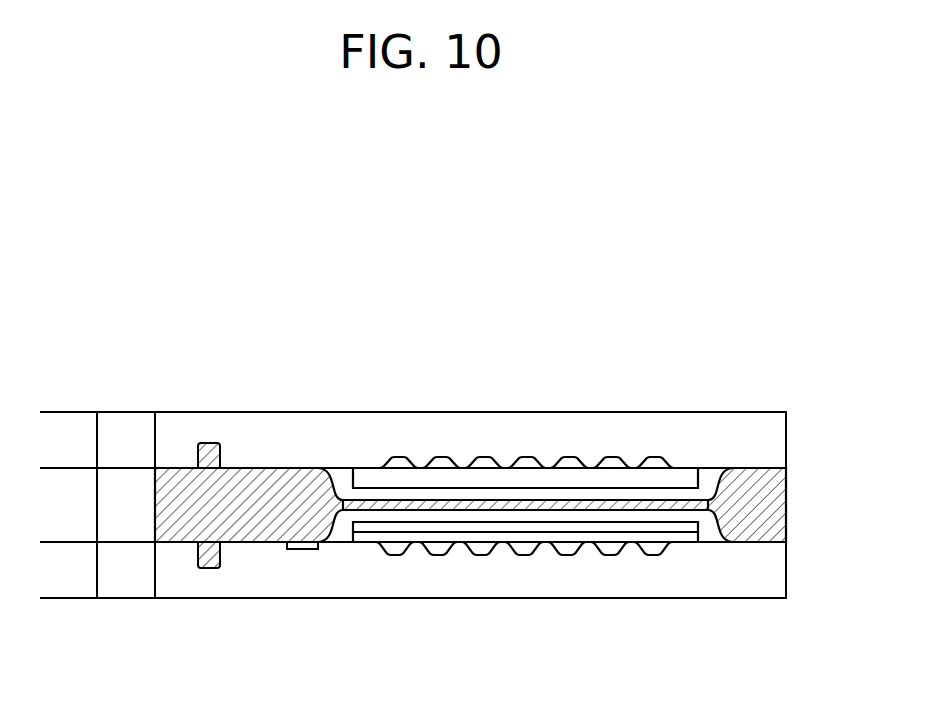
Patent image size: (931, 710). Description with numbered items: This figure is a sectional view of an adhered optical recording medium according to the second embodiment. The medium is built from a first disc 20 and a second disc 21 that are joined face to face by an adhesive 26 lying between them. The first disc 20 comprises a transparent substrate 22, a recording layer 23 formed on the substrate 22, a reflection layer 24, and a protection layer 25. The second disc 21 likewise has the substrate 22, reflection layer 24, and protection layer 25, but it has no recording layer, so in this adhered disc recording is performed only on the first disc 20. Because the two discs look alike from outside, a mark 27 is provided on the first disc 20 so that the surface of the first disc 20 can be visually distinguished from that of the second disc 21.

The first disc 20 is at (781, 619).
The second disc 21 is at (771, 396).
The transparent substrate 22 is at (767, 434).
The recording layer 23 is at (525, 552).
The reflection layer 24 is at (613, 457).
The protection layer 25 is at (342, 478).
The adhesive 26 is at (757, 483).
The mark 27 is at (300, 548).